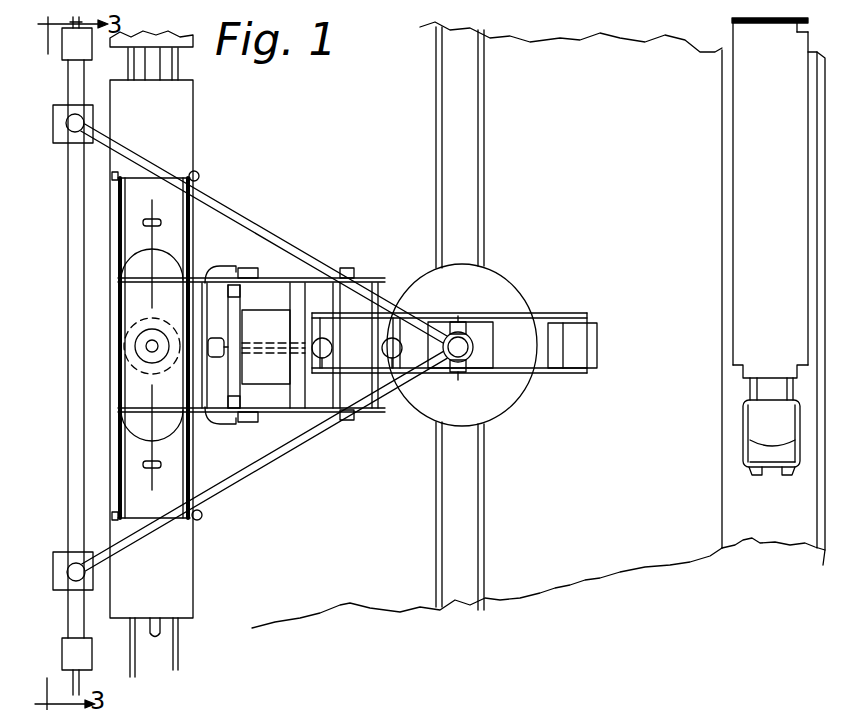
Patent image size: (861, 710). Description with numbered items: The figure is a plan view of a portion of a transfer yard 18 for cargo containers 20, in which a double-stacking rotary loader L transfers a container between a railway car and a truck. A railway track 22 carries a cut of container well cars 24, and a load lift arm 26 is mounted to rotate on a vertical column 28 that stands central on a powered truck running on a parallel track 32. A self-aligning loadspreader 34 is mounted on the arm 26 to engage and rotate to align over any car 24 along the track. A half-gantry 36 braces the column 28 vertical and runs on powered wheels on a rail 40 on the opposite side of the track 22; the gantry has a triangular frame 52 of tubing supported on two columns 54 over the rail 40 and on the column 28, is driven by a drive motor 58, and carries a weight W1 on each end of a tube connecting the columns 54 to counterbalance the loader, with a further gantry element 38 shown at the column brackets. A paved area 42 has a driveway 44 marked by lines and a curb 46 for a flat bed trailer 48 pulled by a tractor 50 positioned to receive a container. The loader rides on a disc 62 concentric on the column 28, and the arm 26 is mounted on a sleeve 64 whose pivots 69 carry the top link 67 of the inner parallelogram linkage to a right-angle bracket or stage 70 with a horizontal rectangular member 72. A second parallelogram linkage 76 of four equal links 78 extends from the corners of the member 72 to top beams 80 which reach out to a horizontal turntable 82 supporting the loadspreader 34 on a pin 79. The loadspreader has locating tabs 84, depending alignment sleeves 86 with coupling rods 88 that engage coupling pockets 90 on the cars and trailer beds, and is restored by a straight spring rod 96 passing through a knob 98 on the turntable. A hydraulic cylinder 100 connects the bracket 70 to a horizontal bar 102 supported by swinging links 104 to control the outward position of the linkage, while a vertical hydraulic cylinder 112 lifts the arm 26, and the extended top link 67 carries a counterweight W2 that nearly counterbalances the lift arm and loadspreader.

The transfer yard 18 is at (390, 619).
The cargo container 20 is at (130, 208).
The railway track 22 is at (180, 65).
The container well car 24 is at (193, 124).
The load lift arm 26 is at (356, 310).
The vertical column 28 is at (495, 318).
The track 32 is at (487, 522).
The self-aligning loadspreader 34 is at (110, 478).
The half-gantry 36 is at (68, 516).
The pivot bracket 38 is at (60, 104).
The rail 40 is at (79, 684).
The paved area 42 is at (587, 576).
The driveway 44 is at (757, 548).
The curb 46 is at (823, 555).
The flat bed trailer 48 is at (748, 235).
The tractor 50 is at (747, 432).
The triangular frame 52 is at (277, 228).
The column 54 is at (62, 143).
The drive motor 58 is at (53, 135).
The disc 62 is at (506, 401).
The sleeve 64 is at (468, 337).
The top link 67 is at (523, 323).
The pivot 69 is at (462, 320).
The right-angle bracket or stage 70 is at (323, 417).
The horizontal rectangular member 72 is at (270, 310).
The second parallelogram linkage 76 is at (256, 420).
The link 78 is at (262, 254).
The pin 79 is at (140, 348).
The top beam 80 is at (147, 270).
The horizontal turntable 82 is at (140, 378).
The locating tab 84 is at (190, 205).
The alignment sleeve 86 is at (198, 175).
The locating and coupling rod 88 is at (200, 520).
The coupling pocket 90 is at (113, 177).
The straight spring rod 96 is at (150, 300).
The knob 98 is at (137, 333).
The hydraulic cylinder 100 is at (256, 345).
The horizontal bar 102 is at (207, 418).
The swinging link 104 is at (208, 263).
The vertical hydraulic cylinder 112 is at (398, 375).
The weight W1 is at (62, 56).
The counterweight W2 is at (598, 340).
The double-stacking rotary loader L is at (305, 477).